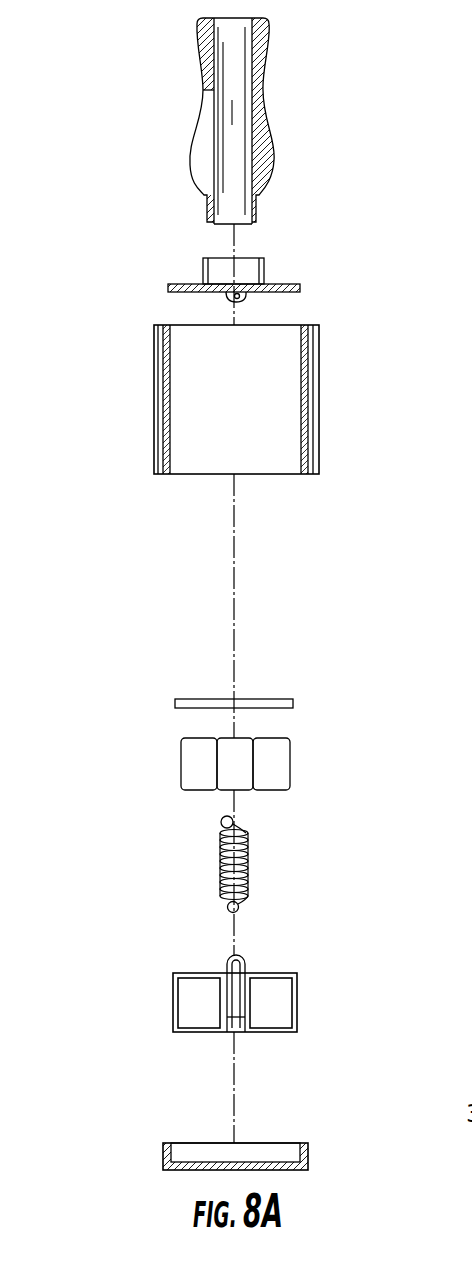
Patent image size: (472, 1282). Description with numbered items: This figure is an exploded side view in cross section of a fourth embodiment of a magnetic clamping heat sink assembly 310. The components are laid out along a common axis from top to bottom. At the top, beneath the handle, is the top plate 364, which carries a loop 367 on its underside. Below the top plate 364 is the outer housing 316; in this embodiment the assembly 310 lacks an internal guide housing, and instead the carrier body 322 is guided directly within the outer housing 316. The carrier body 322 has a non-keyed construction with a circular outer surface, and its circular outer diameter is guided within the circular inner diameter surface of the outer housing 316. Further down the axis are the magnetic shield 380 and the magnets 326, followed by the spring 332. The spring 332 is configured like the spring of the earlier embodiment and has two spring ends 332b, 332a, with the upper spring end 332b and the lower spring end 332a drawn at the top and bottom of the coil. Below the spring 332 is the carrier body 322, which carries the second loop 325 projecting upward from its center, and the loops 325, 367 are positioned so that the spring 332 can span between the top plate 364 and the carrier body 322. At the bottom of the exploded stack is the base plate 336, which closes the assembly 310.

The magnetic clamping heat sink assembly 310 is at (122, 221).
The top plate 364 is at (184, 282).
The loop 367 is at (243, 298).
The outer housing 316 is at (176, 422).
The magnetic shield 380 is at (184, 709).
The magnets 326 is at (278, 765).
The spring 332 is at (240, 860).
The spring end 332b is at (236, 821).
The spring end 332a is at (226, 909).
The loop 325 is at (229, 965).
The carrier body 322 is at (242, 981).
The base plate 336 is at (162, 1152).